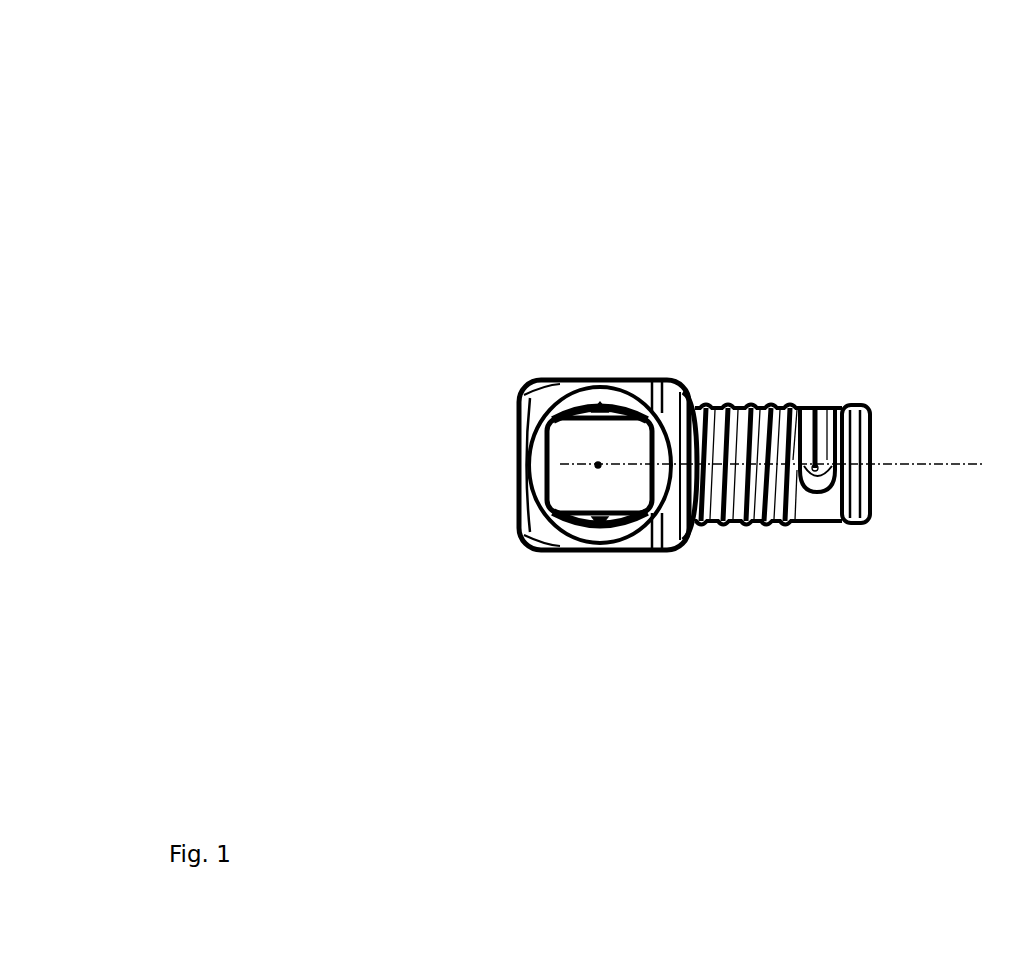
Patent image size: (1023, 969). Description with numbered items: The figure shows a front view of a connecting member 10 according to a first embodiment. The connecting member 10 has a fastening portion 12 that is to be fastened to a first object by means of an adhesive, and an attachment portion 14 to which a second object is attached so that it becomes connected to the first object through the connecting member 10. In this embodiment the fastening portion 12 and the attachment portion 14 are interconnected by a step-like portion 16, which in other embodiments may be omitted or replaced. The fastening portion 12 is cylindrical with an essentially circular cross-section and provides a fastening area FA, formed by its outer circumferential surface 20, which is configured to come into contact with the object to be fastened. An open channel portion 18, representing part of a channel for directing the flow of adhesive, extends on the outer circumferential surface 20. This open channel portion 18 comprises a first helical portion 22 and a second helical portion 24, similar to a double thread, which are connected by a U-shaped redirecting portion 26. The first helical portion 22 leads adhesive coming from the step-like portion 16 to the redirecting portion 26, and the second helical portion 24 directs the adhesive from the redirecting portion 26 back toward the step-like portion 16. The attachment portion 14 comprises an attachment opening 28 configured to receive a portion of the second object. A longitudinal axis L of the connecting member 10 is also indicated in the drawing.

The connecting member 10 is at (897, 153).
The fastening portion 12 is at (855, 391).
The attachment portion 14 is at (615, 370).
The step-like portion 16 is at (697, 392).
The open channel portion 18 is at (759, 529).
The outer circumferential surface 20 is at (836, 512).
The first helical portion 22 is at (797, 405).
The second helical portion 24 is at (825, 405).
The redirecting portion 26 is at (872, 510).
The attachment opening 28 is at (518, 418).
The fastening area FA is at (797, 520).
The longitudinal axis L is at (781, 463).